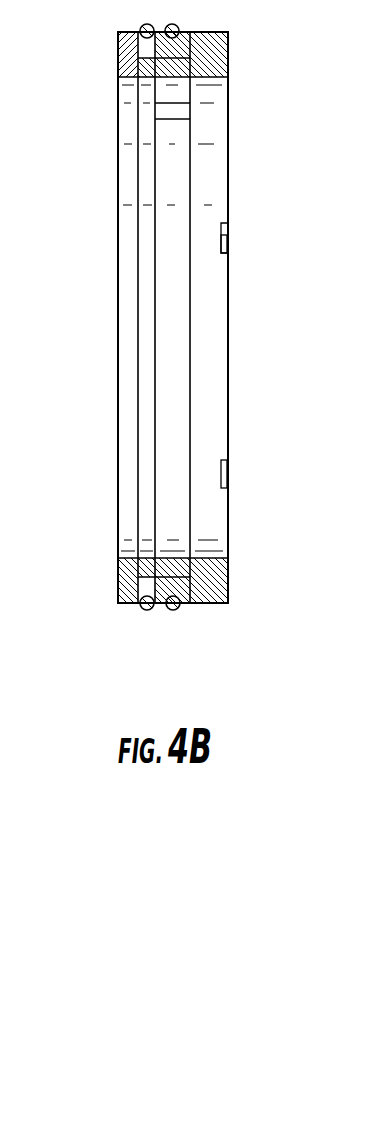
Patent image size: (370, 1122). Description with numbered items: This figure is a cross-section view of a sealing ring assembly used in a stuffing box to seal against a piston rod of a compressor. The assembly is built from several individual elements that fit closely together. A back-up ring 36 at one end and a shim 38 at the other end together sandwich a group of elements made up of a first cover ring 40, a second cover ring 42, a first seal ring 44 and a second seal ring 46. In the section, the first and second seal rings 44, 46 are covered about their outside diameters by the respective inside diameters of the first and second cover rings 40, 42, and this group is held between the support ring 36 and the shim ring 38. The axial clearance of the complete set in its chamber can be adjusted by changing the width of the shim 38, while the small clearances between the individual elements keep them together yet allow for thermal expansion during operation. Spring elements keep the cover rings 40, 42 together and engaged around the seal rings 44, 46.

The back-up ring 36 is at (122, 50).
The shim 38 is at (216, 50).
The first cover ring 40 is at (147, 584).
The second cover ring 42 is at (172, 583).
The first seal ring 44 is at (153, 563).
The second seal ring 46 is at (177, 563).